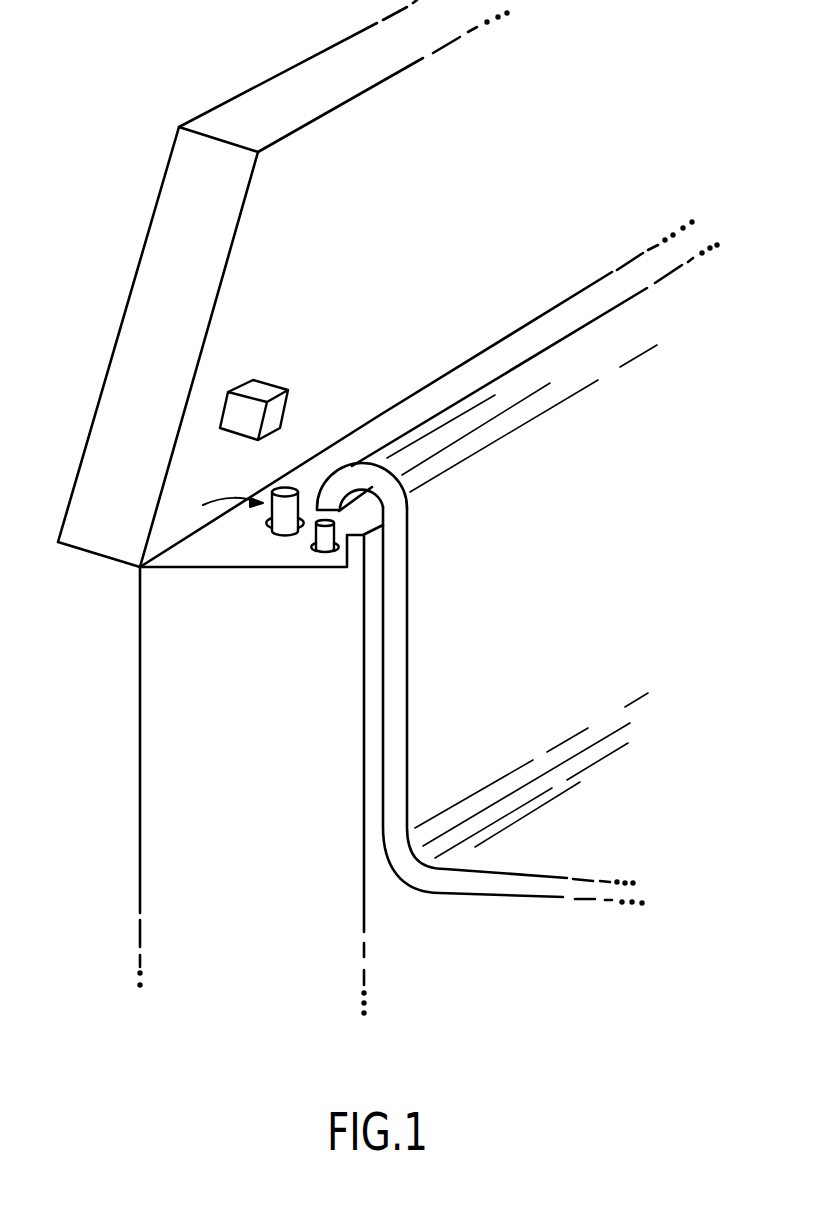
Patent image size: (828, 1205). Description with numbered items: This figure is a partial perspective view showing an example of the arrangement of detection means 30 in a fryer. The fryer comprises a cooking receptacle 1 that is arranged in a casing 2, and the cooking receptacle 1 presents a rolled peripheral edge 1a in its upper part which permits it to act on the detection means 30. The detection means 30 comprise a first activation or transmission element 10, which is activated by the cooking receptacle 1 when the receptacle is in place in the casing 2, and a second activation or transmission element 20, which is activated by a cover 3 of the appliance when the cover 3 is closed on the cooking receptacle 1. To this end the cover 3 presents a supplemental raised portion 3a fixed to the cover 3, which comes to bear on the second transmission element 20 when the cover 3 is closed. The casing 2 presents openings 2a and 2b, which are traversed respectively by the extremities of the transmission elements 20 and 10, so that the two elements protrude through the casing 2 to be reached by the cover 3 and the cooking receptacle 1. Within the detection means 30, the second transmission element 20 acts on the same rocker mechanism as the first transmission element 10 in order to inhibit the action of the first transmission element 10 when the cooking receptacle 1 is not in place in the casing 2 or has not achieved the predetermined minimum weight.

The cooking receptacle 1 is at (498, 884).
The rolled peripheral edge 1a is at (333, 490).
The casing 2 is at (183, 835).
The opening 2a is at (285, 533).
The opening 2b is at (318, 548).
The cover 3 is at (157, 295).
The supplemental raised portion 3a is at (258, 390).
The transmission element 10 is at (312, 538).
The second transmission element 20 is at (272, 502).
The detection means 30 is at (216, 507).